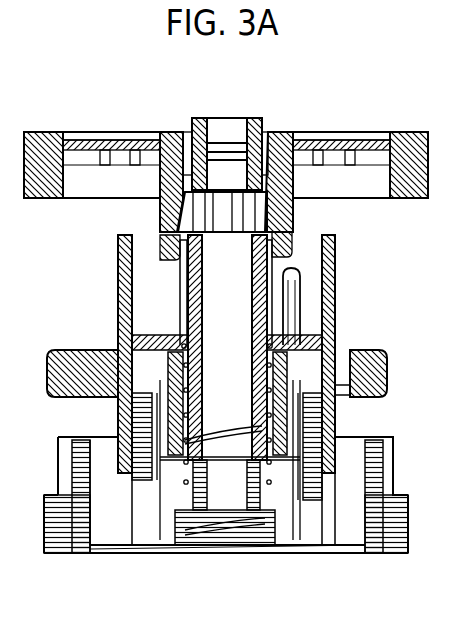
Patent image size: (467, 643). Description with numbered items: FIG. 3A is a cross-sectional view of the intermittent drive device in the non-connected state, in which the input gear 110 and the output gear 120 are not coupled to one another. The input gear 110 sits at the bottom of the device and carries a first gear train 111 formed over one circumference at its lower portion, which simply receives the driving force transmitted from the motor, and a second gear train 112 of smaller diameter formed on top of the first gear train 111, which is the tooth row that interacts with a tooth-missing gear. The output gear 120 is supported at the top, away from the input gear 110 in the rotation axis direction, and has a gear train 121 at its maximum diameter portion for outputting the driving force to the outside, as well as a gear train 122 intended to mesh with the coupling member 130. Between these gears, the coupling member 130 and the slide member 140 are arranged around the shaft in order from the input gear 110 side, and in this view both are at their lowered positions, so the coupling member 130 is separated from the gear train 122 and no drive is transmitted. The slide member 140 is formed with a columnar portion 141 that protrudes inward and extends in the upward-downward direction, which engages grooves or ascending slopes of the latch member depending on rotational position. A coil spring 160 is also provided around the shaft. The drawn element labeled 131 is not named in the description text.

The input gear 110 is at (390, 497).
The first gear train 111 is at (410, 517).
The second gear train 112 is at (397, 442).
The output gear 120 is at (257, 118).
The gear train 121 is at (430, 158).
The gear train 122 is at (242, 221).
The coupling member 130 is at (270, 347).
The pin 131 is at (300, 338).
The slide member 140 is at (334, 270).
The columnar portion 141 is at (293, 268).
The coil spring 160 is at (232, 420).